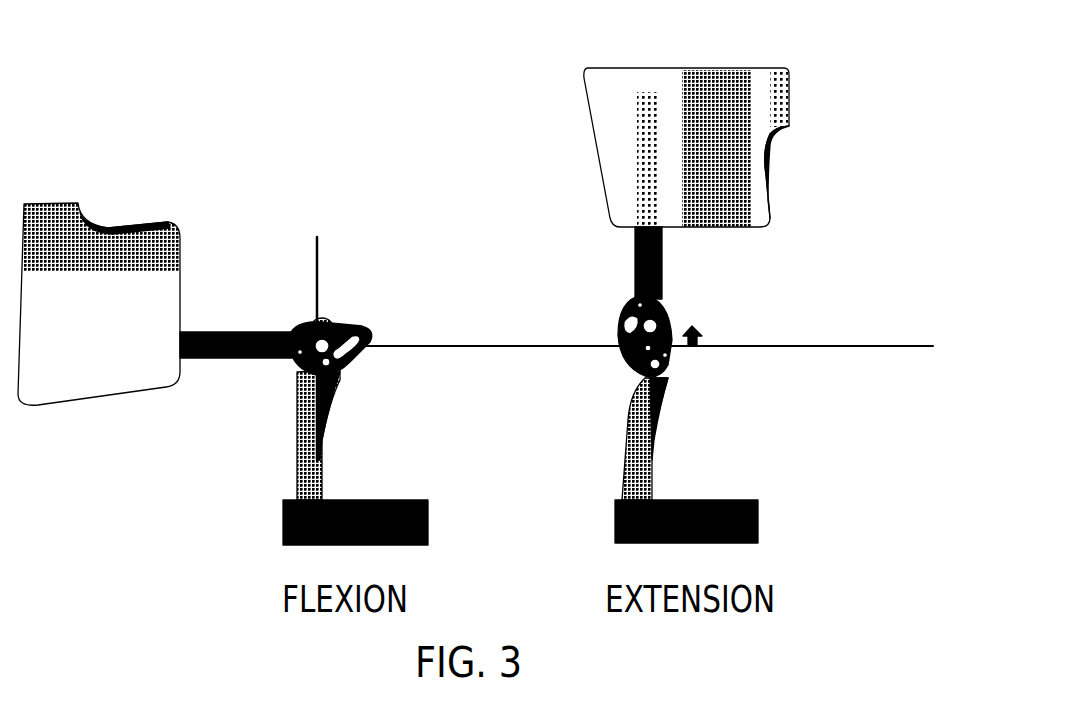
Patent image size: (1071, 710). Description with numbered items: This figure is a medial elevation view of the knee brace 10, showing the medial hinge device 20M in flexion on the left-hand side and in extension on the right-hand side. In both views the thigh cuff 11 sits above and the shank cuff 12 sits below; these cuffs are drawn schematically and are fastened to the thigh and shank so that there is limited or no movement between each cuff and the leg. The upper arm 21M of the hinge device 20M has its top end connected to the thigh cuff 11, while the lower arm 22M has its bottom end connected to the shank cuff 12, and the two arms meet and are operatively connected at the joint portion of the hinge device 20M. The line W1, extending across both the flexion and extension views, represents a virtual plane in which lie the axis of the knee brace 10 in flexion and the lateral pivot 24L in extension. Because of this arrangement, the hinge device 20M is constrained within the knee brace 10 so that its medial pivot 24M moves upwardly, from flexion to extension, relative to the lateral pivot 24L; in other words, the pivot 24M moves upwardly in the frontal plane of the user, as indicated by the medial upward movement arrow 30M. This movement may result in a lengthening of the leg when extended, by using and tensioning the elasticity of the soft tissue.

The knee brace 10 is at (290, 173).
The thigh cuff 11 is at (140, 257).
The shank cuff 12 is at (360, 510).
The medial hinge device 20M is at (378, 318).
The upper arm 21M is at (232, 332).
The lower arm 22M is at (298, 462).
The medial pivot 24M is at (318, 345).
The lateral pivot 24L is at (647, 350).
The medial upward movement 30M is at (705, 330).
The virtual plane line W1 is at (850, 343).